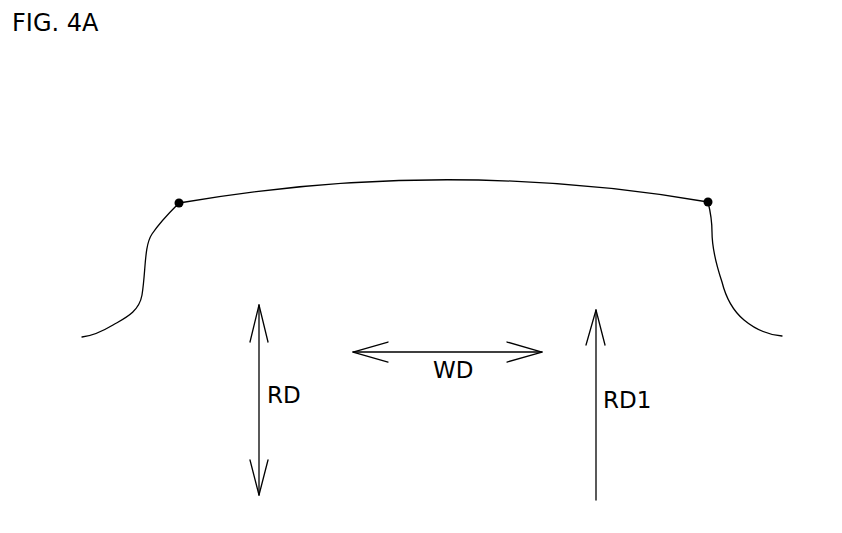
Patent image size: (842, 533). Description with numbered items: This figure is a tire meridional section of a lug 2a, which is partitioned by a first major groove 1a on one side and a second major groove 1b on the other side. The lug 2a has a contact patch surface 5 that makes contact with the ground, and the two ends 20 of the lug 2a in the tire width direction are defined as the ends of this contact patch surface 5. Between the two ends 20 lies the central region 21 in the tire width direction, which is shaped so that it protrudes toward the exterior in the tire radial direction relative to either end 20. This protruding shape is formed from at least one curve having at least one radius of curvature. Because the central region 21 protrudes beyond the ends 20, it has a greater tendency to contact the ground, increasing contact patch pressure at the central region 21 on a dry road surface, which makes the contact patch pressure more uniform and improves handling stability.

The lug 2a is at (306, 135).
The central region 21 is at (452, 180).
The contact patch surface 5 is at (570, 185).
The ends in the tire width direction 20 is at (178, 197).
The first major groove 1a is at (762, 276).
The second major groove 1b is at (124, 277).